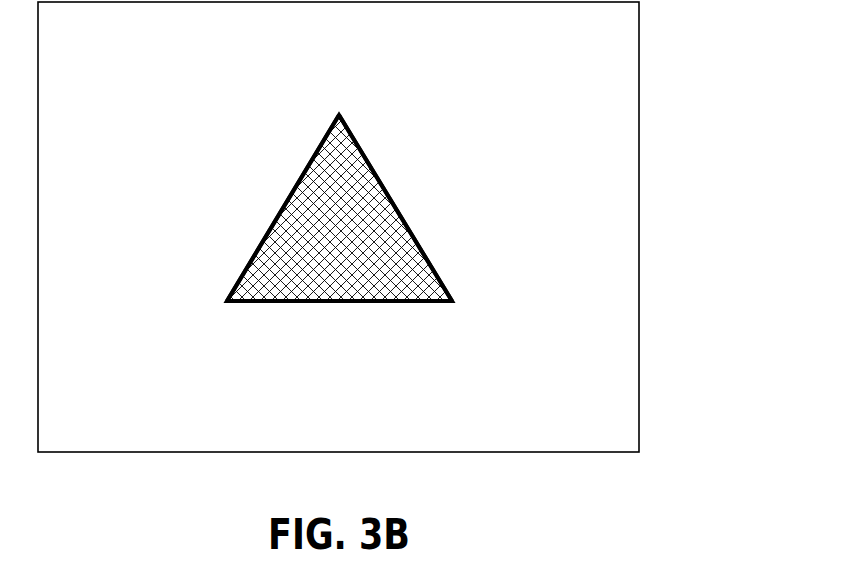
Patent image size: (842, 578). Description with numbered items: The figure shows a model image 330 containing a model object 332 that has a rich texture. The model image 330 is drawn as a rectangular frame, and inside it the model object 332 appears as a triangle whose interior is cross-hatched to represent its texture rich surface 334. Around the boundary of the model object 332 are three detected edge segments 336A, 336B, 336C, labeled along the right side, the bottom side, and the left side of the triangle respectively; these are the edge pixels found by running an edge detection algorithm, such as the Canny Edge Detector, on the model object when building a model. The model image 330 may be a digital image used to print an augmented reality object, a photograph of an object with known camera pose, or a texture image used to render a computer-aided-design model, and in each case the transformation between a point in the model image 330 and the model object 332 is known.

The model image 330 is at (639, 76).
The model object 332 is at (321, 140).
The texture rich surface 334 is at (357, 176).
The detected edge segment 336A is at (450, 290).
The detected edge segment 336B is at (302, 302).
The detected edge segment 336C is at (250, 265).